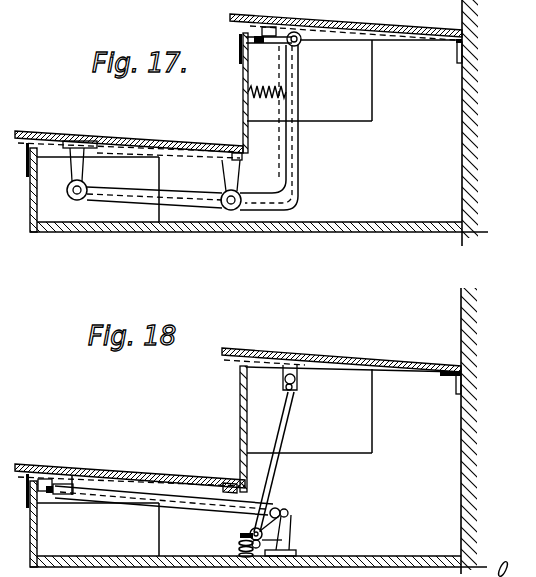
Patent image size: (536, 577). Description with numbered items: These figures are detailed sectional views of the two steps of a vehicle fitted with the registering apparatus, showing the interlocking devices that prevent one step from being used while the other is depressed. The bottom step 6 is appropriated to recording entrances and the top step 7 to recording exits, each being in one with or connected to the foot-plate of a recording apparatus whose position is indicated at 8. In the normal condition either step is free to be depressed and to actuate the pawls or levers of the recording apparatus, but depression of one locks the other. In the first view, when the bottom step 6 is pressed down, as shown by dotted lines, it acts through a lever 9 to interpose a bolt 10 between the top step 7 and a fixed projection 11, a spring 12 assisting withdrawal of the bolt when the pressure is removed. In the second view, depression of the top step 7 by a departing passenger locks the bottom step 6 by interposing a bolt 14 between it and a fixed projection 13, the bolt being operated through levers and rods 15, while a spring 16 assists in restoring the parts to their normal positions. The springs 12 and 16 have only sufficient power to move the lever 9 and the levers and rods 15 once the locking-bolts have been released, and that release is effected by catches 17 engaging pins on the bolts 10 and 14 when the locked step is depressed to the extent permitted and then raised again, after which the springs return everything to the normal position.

In FIG. 17, the bottom step 6 is at (129, 144).
In FIG. 18, the bottom step 6 is at (144, 489).
In FIG. 17, the top step 7 is at (346, 27).
In FIG. 18, the top step 7 is at (341, 359).
In FIG. 17, the recording apparatus 8 is at (249, 131).
In FIG. 18, the recording apparatus 8 is at (249, 461).
In FIG. 17, the lever 9 is at (187, 127).
In FIG. 17, the bolt 10 is at (287, 44).
In FIG. 17, the fixed projection 11 is at (269, 46).
In FIG. 17, the spring 12 is at (267, 85).
In FIG. 18, the fixed projection 13 is at (44, 494).
In FIG. 18, the bolt 14 is at (63, 496).
In FIG. 18, the levers and rods 15 is at (278, 460).
In FIG. 18, the spring 16 is at (237, 545).
In FIG. 17, the catches 17 is at (276, 30).
In FIG. 18, the catches 17 is at (72, 476).